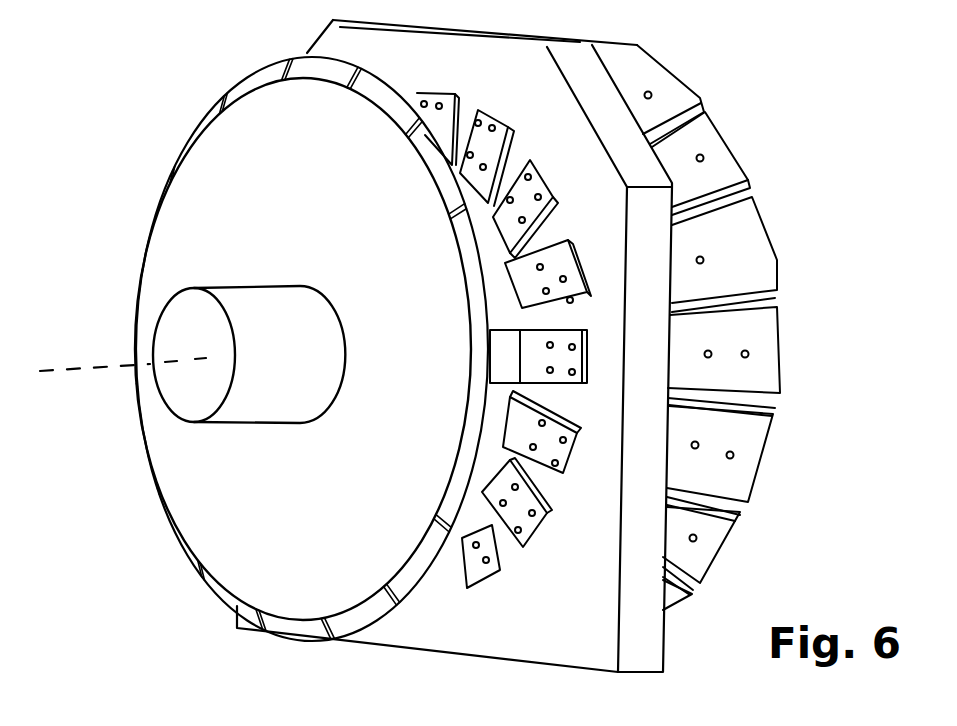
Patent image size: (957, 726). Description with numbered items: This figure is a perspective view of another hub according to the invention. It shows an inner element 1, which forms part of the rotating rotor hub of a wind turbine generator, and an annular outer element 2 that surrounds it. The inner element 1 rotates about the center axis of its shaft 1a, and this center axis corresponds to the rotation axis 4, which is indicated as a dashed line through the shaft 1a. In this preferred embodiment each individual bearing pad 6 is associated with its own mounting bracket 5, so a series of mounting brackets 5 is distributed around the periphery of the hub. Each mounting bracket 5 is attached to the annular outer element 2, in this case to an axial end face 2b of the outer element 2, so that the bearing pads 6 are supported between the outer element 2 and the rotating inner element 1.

The inner element 1 is at (394, 475).
The shaft 1a is at (262, 306).
The outer element 2 is at (640, 637).
The axial end face 2b is at (432, 349).
The rotation axis 4 is at (90, 376).
The mounting bracket 5 is at (538, 221).
The bearing pad 6 is at (468, 297).